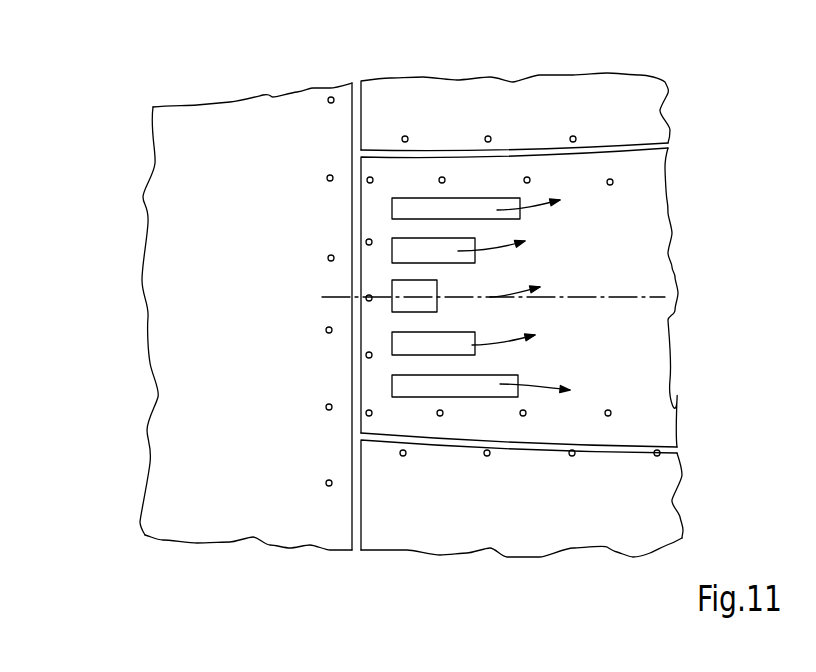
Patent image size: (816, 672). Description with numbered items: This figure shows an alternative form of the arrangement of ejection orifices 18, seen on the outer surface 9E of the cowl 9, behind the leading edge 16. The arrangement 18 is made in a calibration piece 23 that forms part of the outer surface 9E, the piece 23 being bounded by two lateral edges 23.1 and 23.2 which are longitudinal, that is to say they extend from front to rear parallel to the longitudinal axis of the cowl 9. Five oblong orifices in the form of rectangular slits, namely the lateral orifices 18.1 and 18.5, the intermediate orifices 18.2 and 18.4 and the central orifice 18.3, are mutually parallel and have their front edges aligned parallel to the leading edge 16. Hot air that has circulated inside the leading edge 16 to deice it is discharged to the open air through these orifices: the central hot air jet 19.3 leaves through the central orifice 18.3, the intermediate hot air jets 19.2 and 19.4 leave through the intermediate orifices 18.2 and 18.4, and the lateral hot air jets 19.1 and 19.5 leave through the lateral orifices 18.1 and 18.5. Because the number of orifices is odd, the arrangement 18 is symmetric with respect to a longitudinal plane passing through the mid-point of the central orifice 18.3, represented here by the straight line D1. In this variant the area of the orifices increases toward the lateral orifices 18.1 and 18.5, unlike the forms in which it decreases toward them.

The leading edge 16 is at (123, 242).
The arrangement of oblong orifices 18 is at (387, 267).
The lateral orifice 18.1 is at (408, 207).
The intermediate orifice 18.2 is at (403, 253).
The central orifice 18.3 is at (405, 303).
The intermediate orifice 18.4 is at (408, 348).
The lateral orifice 18.5 is at (408, 387).
The lateral hot air jet 19.1 is at (537, 190).
The intermediate hot air jet 19.2 is at (503, 237).
The central hot air jet 19.3 is at (513, 282).
The intermediate hot air jet 19.4 is at (512, 343).
The lateral hot air jet 19.5 is at (543, 390).
The calibration piece 23 is at (668, 215).
The lateral edge of the calibration piece 23.1 is at (553, 147).
The lateral edge of the calibration piece 23.2 is at (550, 445).
The cowl 9 is at (442, 530).
The outer surface of the cowl 9E is at (647, 503).
The straight line representing the longitudinal symmetry plane D1 is at (638, 297).